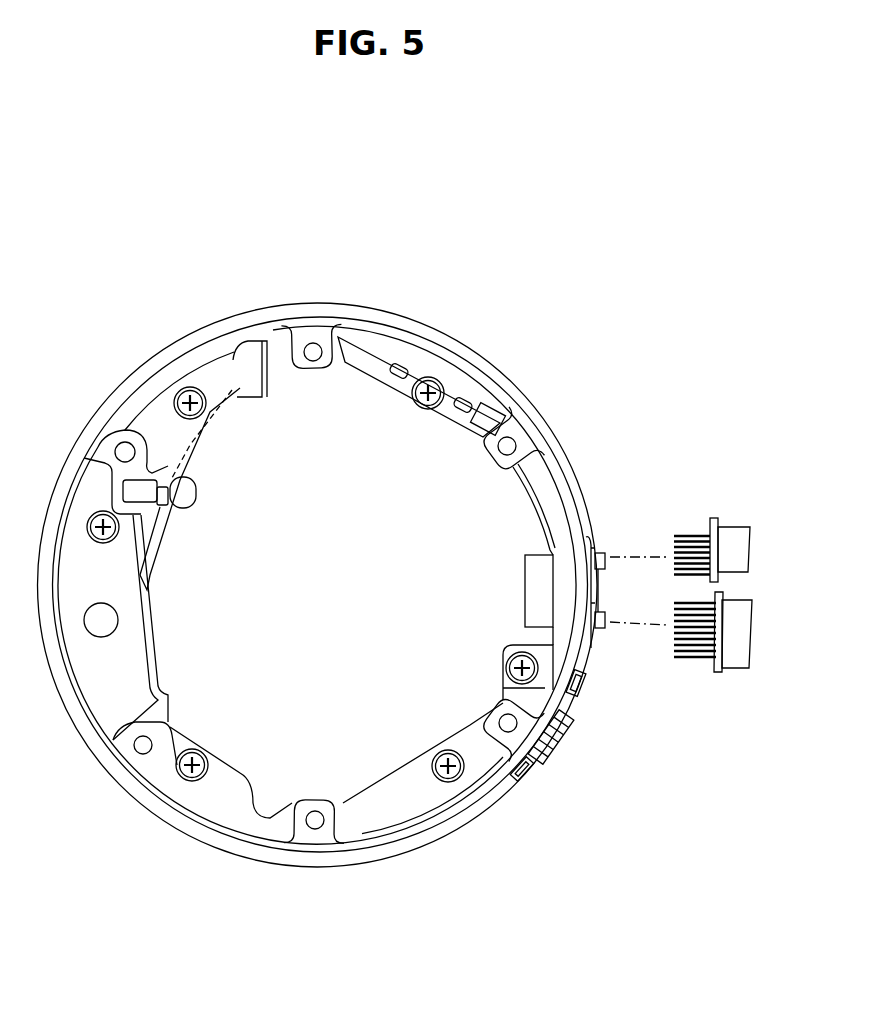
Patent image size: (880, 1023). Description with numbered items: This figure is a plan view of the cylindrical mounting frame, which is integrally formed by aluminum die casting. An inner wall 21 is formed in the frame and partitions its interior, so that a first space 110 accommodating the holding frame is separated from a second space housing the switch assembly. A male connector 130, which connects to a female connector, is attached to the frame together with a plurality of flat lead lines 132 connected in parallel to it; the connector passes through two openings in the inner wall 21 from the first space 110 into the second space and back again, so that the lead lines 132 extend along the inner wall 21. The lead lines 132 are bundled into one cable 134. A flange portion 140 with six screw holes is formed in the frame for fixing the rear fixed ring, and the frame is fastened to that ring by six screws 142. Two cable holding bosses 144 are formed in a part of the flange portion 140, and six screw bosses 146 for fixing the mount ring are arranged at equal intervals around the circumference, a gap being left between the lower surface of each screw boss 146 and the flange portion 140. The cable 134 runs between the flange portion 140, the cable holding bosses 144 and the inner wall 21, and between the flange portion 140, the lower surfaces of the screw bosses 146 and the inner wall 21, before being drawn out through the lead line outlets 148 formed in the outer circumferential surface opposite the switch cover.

The first space 110 is at (340, 337).
The cable 134 is at (408, 362).
The cable holding bosses 144 is at (468, 398).
The screw bosses 146 is at (300, 378).
The screws 142 is at (416, 407).
The flange portion 140 is at (443, 424).
The lead lines 132 is at (196, 494).
The male connector 130 is at (163, 537).
The inner wall 21 is at (150, 612).
The lead line outlets 148 is at (601, 612).